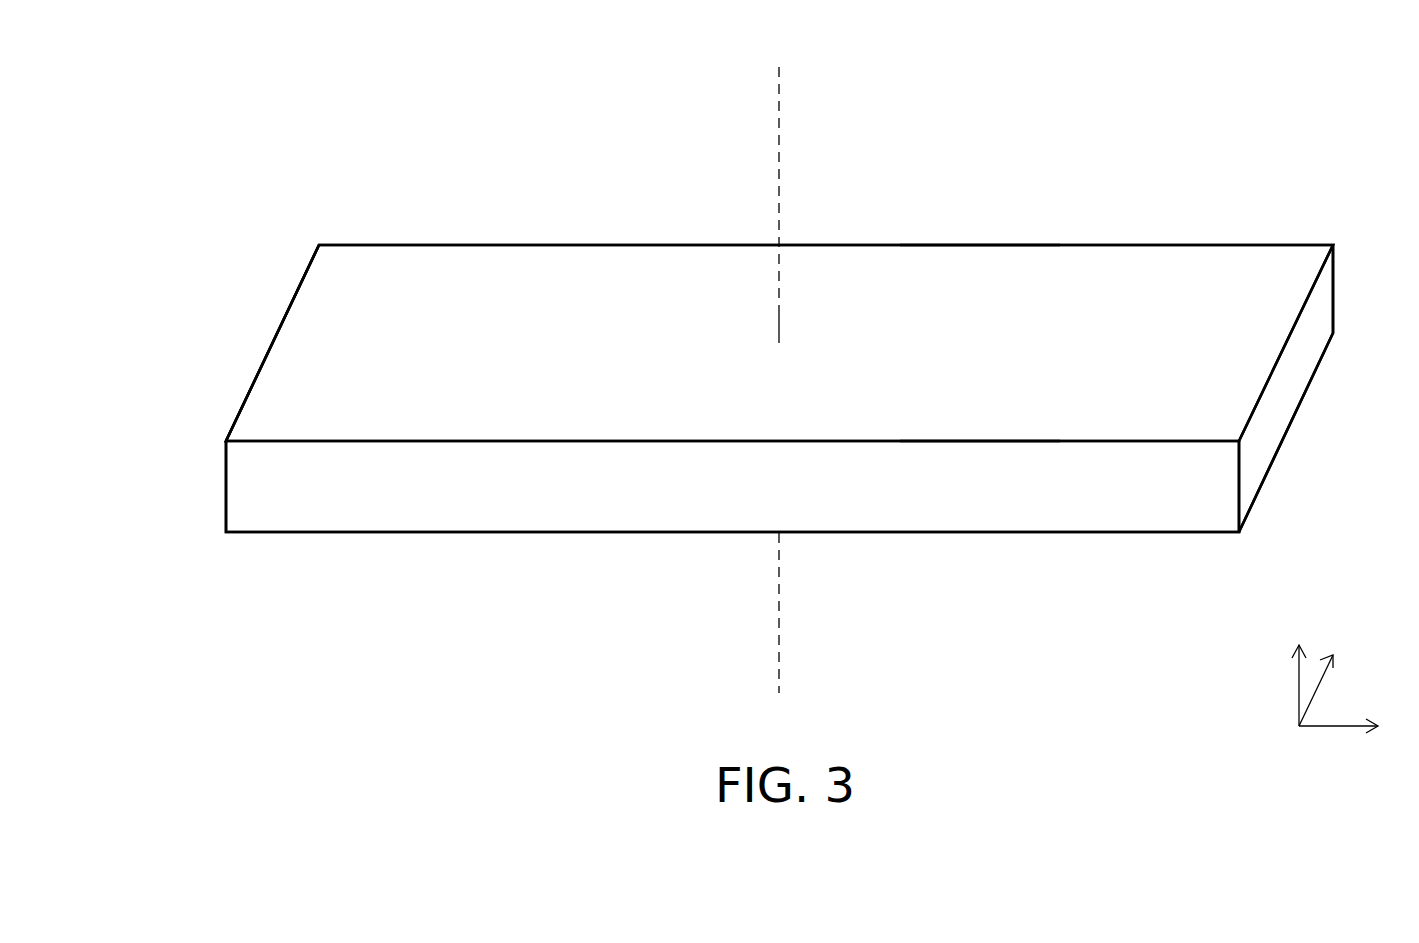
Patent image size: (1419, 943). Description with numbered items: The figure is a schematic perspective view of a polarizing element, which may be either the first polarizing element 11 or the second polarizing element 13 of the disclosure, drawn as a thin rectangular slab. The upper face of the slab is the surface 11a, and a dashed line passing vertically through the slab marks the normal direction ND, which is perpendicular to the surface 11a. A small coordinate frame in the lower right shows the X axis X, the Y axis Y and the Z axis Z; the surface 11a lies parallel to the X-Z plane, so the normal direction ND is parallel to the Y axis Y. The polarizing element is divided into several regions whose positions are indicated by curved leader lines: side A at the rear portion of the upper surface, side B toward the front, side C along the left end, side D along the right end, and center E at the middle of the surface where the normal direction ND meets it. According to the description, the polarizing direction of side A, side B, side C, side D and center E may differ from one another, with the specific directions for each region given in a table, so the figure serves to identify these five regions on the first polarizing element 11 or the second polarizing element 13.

The first polarizing element 11 is at (247, 485).
The second polarizing element 13 is at (732, 486).
The surface 11a is at (390, 285).
The normal direction ND is at (777, 365).
The side A is at (941, 273).
The side B is at (923, 417).
The side C is at (305, 377).
The side D is at (1248, 347).
The center E is at (779, 343).
The X-axis X is at (1348, 730).
The Y-axis Y is at (1297, 673).
The Z-axis Z is at (1319, 678).